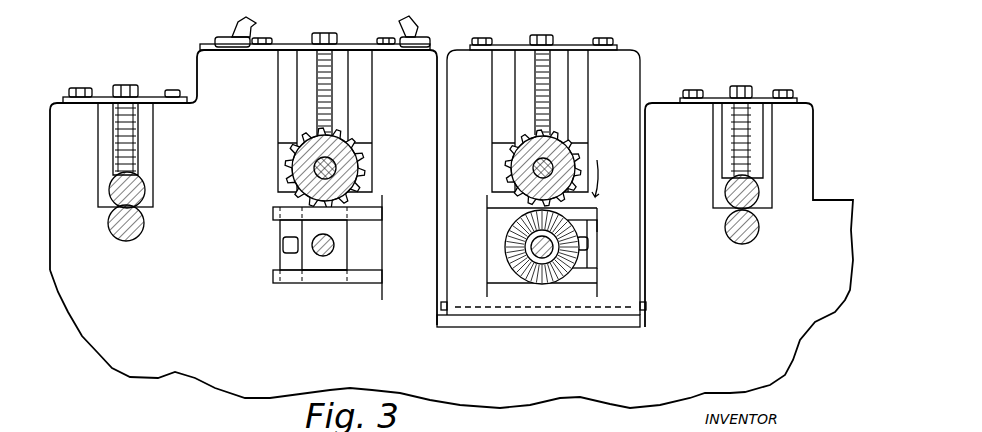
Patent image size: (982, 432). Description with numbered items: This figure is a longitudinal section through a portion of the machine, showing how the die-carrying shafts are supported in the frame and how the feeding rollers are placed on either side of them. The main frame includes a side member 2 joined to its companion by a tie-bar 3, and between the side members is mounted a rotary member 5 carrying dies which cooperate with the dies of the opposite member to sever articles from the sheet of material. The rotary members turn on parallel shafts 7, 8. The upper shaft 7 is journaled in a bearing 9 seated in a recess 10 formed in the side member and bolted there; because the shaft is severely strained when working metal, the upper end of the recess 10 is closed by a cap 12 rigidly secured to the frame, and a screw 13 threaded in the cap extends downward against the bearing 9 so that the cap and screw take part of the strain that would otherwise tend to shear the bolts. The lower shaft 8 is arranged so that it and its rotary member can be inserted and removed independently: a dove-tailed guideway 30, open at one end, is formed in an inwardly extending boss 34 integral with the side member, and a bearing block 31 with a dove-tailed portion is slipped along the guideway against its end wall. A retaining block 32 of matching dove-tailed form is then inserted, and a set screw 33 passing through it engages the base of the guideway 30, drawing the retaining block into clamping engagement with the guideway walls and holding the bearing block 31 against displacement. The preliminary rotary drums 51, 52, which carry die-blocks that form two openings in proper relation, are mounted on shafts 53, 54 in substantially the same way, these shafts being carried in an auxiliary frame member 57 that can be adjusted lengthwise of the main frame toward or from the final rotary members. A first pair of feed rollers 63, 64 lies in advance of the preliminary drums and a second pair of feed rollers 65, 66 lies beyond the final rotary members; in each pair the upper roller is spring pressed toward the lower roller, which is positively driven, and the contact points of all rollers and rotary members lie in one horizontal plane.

The side member 2 is at (403, 60).
The tie-bar 3 is at (238, 28).
The rotary member 5 is at (368, 150).
The upper shaft 7 is at (296, 178).
The shaft 8 is at (320, 252).
The bearing 9 is at (282, 150).
The recess 10 is at (275, 94).
The cap 12 is at (287, 46).
The screw 13 is at (328, 60).
The dove-tailed guideway 30 is at (276, 268).
The bearing block 31 is at (334, 264).
The retaining block 32 is at (285, 258).
The set screw 33 is at (283, 243).
The boss 34 is at (284, 283).
The rotary drum 51 is at (568, 140).
The rotary drum 52 is at (582, 235).
The shaft 53 is at (580, 153).
The shaft 54 is at (545, 262).
The auxiliary frame member 57 is at (625, 70).
The feed roller 63 is at (757, 236).
The feed roller 64 is at (750, 196).
The feed roller 65 is at (115, 226).
The feed roller 66 is at (120, 190).